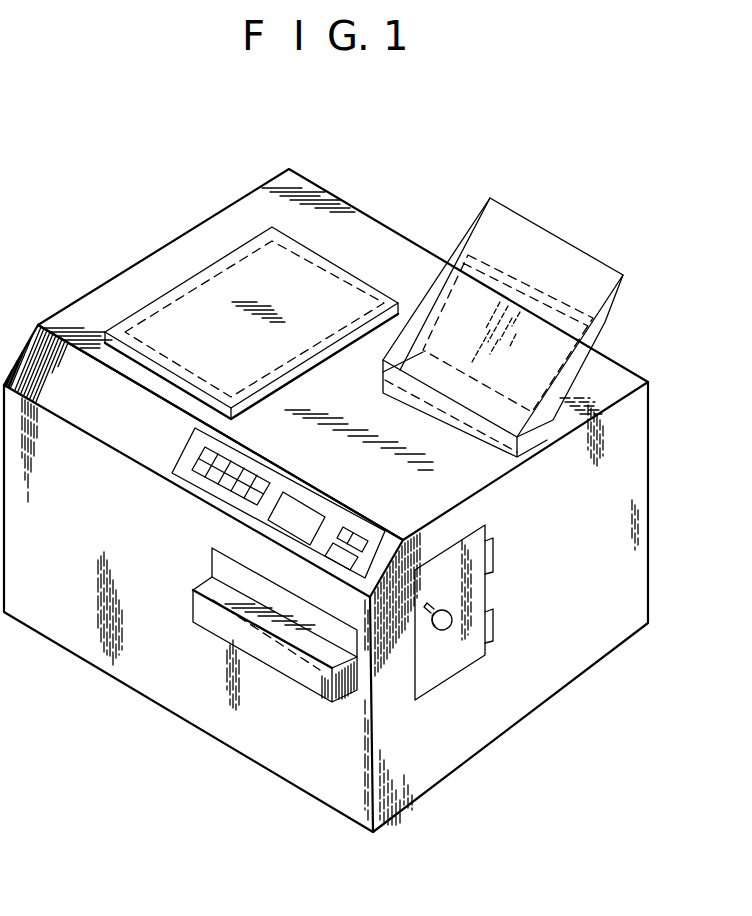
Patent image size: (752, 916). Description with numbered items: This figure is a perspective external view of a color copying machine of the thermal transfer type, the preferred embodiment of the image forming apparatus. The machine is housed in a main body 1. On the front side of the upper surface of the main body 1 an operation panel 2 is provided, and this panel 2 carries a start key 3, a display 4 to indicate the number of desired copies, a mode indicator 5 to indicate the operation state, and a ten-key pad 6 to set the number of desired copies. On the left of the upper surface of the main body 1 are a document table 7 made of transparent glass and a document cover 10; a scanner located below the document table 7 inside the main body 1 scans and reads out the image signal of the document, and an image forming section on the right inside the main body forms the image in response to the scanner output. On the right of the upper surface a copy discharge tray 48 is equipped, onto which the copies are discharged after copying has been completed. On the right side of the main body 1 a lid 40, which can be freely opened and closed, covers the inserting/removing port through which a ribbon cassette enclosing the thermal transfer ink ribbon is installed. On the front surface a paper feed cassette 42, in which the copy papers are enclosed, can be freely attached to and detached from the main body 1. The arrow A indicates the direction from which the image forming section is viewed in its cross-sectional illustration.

The main body 1 is at (497, 738).
The operation panel 2 is at (183, 450).
The start key 3 is at (343, 557).
The display 4 is at (357, 538).
The mode indicator 5 is at (293, 530).
The ten-key pad 6 is at (206, 478).
The document table 7 is at (165, 305).
The document cover 10 is at (230, 253).
The lid 40 is at (432, 683).
The paper feed cassette 42 is at (303, 677).
The copy discharge tray 48 is at (558, 245).
The arrow A is at (552, 613).